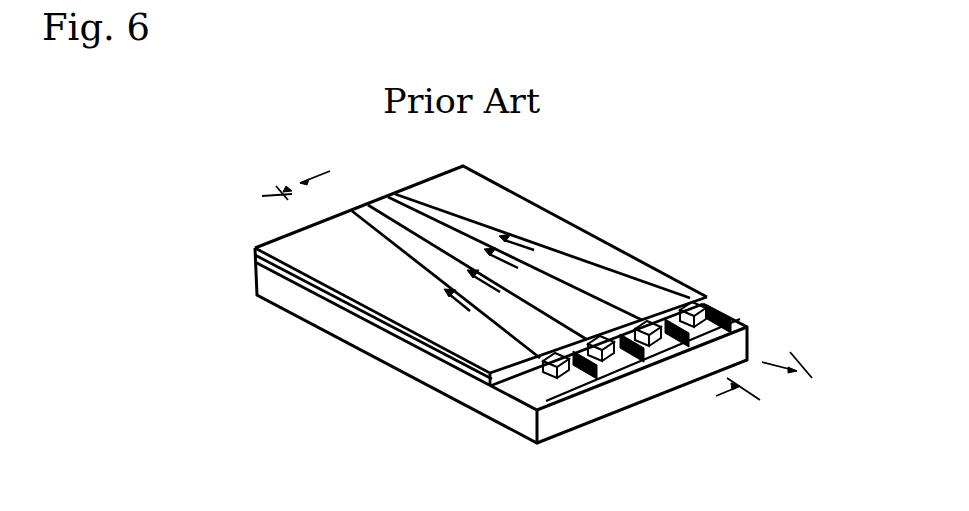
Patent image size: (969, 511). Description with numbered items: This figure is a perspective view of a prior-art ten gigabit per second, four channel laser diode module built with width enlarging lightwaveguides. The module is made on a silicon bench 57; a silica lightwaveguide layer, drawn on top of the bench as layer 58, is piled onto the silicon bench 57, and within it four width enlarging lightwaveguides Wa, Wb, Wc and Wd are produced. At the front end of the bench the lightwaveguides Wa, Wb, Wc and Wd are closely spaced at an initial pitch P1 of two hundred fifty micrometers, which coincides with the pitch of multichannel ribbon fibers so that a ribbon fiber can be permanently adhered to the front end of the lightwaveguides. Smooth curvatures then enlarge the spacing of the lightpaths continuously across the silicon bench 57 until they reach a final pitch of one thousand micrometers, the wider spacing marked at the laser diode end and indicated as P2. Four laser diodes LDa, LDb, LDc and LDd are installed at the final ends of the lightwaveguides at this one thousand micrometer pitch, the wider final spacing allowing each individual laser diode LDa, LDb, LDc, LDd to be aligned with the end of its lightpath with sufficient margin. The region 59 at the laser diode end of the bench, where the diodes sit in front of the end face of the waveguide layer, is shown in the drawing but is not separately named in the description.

The silicon bench 57 is at (412, 368).
The optical waveguide layer 58 is at (343, 256).
The laser diode mounting stage 59 is at (738, 316).
The width enlarging lightwaveguide Wa is at (482, 232).
The width enlarging lightwaveguide Wb is at (540, 277).
The width enlarging lightwaveguide Wc is at (445, 280).
The width enlarging lightwaveguide Wd is at (488, 375).
The laser diode LDa is at (695, 294).
The laser diode LDb is at (664, 357).
The laser diode LDc is at (616, 360).
The laser diode LDd is at (573, 380).
The initial pitch P1 is at (293, 168).
The section plane P2 is at (774, 385).